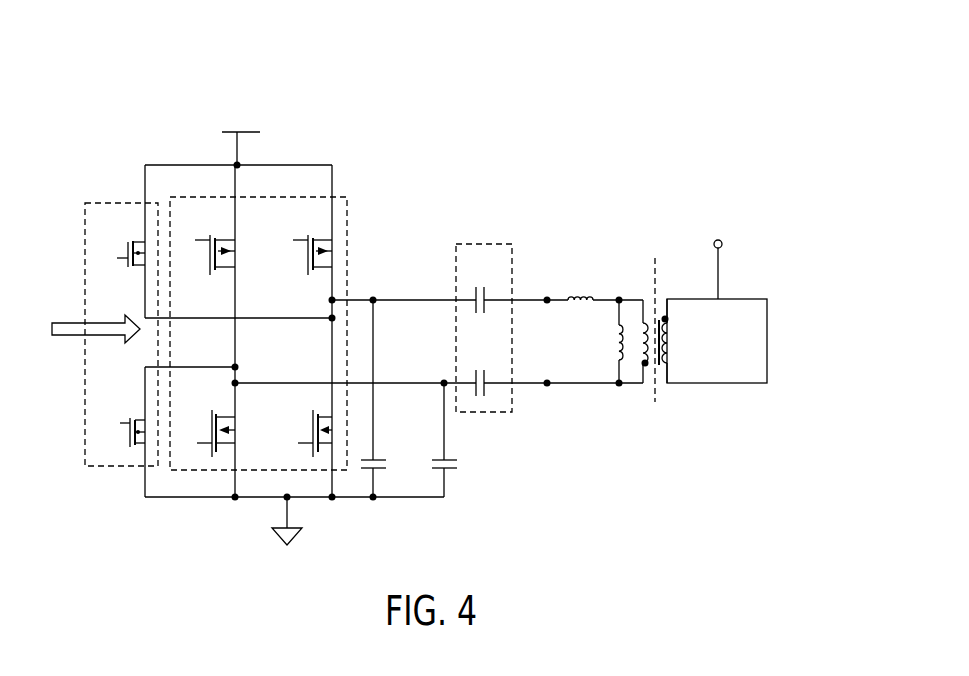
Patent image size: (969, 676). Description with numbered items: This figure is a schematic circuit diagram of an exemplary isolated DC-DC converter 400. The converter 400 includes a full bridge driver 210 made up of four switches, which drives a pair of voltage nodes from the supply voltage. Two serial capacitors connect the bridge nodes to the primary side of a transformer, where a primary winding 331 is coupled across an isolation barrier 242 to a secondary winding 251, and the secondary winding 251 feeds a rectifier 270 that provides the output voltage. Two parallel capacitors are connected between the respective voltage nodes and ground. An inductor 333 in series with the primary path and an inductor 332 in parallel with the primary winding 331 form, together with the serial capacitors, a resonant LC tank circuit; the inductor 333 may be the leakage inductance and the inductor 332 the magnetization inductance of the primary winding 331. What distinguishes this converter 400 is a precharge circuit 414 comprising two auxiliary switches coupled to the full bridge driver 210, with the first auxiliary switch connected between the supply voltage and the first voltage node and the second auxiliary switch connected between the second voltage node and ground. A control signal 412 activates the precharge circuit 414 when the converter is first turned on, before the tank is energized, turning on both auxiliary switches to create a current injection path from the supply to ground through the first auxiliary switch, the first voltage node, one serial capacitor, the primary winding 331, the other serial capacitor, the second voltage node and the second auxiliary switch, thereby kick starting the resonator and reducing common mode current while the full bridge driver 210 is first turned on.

The isolated DC-DC converter 400 is at (592, 93).
The control signal 412 is at (66, 338).
The precharge circuit 414 is at (113, 200).
The full bridge driver 210 is at (185, 472).
The inductor 333 is at (585, 296).
The inductor 332 is at (616, 364).
The primary winding 331 is at (643, 366).
The isolation barrier 242 is at (650, 276).
The secondary winding 251 is at (666, 316).
The rectifier 270 is at (742, 298).